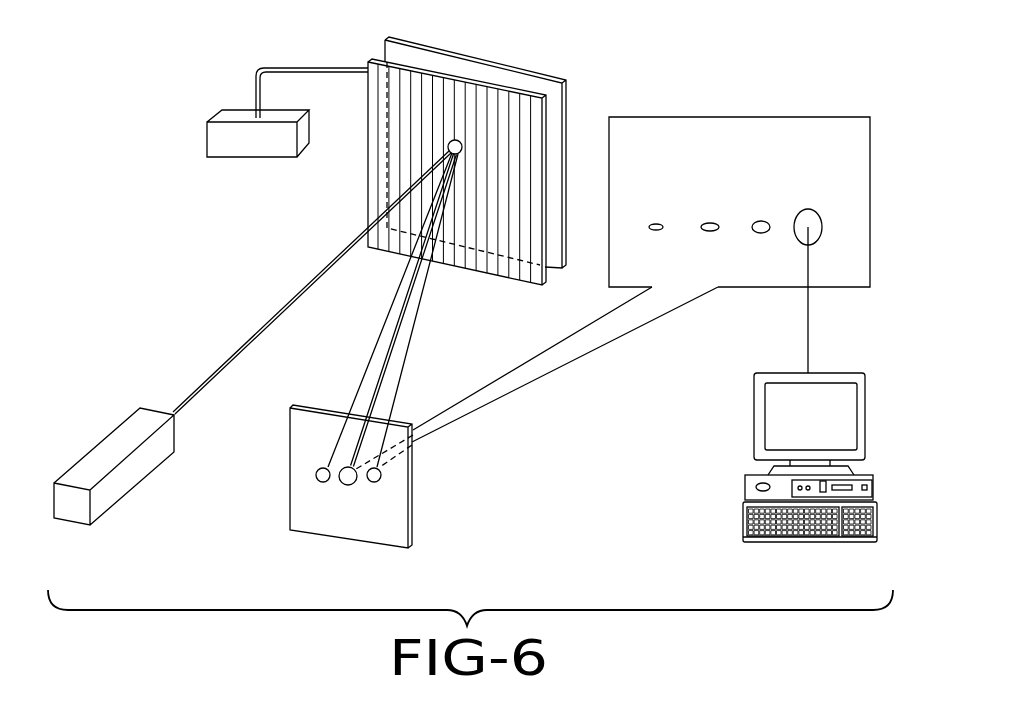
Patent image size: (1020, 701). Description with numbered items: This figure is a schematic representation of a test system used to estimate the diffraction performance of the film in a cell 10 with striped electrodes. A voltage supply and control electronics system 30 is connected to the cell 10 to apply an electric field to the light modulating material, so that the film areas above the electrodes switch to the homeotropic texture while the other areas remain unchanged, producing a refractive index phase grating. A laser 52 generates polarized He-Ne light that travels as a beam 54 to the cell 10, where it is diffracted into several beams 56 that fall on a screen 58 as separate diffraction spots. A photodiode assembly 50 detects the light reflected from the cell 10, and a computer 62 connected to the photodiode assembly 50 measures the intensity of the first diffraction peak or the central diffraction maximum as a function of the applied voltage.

The liquid crystal cell 10 is at (514, 58).
The voltage supply and control electronics system 30 is at (222, 115).
The photodiode detector 50 is at (652, 77).
The laser 52 is at (107, 457).
The laser beam 54 is at (258, 312).
The diffracted beams 56 is at (416, 319).
The high-speed photodiode 58 is at (393, 498).
The computer 62 is at (762, 418).